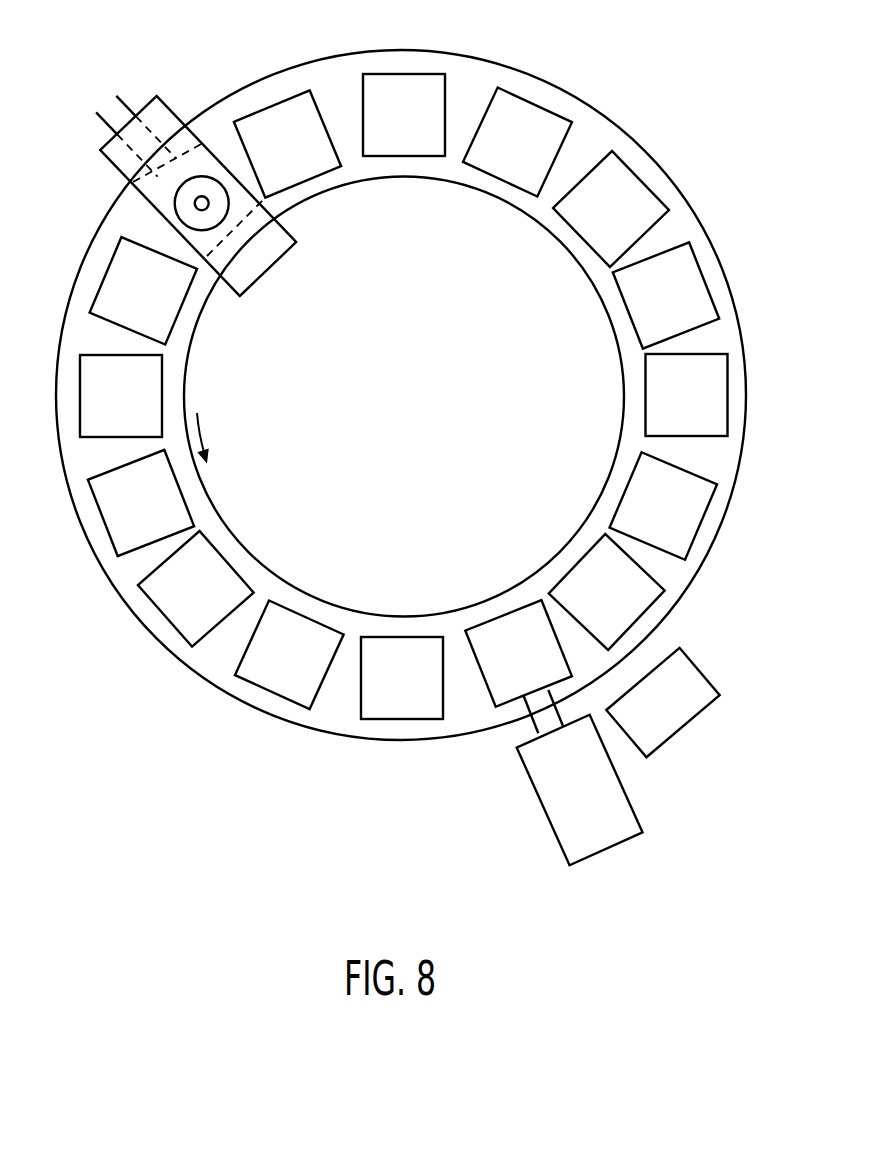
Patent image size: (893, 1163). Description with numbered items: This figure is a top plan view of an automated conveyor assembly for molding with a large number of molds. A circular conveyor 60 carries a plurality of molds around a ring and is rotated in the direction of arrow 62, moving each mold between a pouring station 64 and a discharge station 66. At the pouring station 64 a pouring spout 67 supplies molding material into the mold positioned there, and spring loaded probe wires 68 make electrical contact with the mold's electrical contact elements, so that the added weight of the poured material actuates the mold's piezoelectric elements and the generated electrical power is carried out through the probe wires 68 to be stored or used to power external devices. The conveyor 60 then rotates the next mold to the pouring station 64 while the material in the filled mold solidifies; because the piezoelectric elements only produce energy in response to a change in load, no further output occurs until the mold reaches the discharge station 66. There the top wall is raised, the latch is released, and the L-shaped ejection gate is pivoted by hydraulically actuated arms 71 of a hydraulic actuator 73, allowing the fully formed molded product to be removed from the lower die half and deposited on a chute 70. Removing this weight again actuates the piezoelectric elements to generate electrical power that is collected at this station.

The circular conveyor 60 is at (116, 576).
The arrow 62 is at (207, 423).
The pouring station 64 is at (177, 92).
The discharge station 66 is at (512, 792).
The pouring spout 67 is at (208, 178).
The spring loaded probe wires 68 is at (116, 96).
The chute 70 is at (692, 679).
The hydraulically actuated arms 71 is at (549, 692).
The hydraulic actuator 73 is at (568, 830).